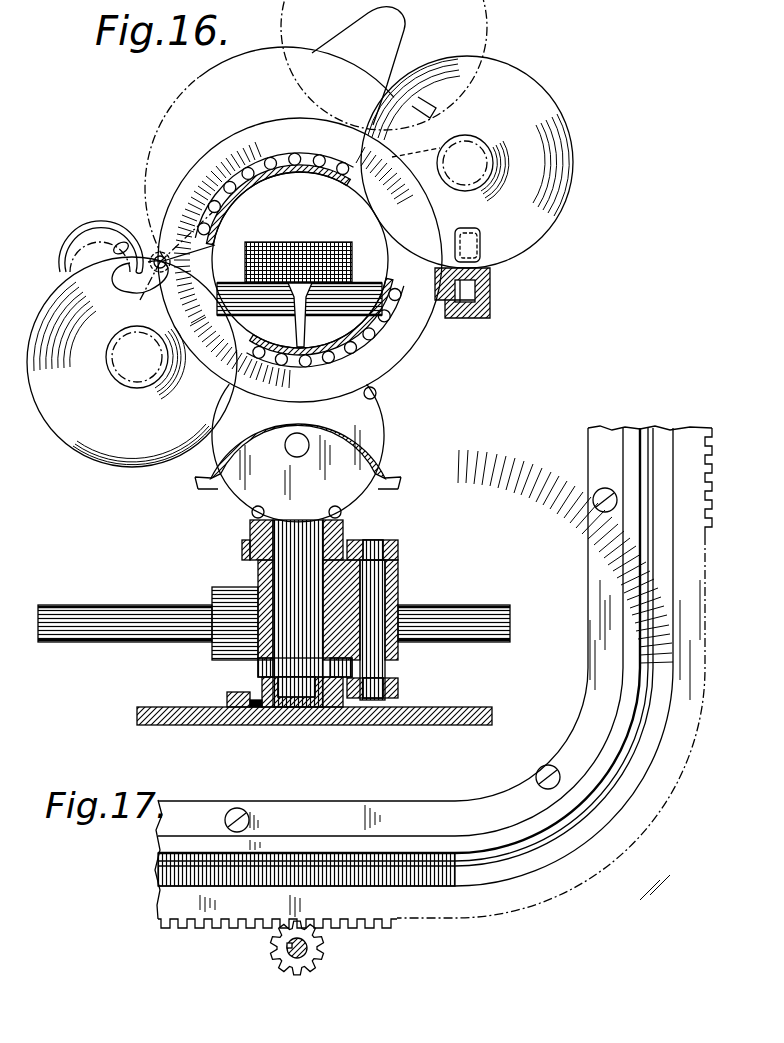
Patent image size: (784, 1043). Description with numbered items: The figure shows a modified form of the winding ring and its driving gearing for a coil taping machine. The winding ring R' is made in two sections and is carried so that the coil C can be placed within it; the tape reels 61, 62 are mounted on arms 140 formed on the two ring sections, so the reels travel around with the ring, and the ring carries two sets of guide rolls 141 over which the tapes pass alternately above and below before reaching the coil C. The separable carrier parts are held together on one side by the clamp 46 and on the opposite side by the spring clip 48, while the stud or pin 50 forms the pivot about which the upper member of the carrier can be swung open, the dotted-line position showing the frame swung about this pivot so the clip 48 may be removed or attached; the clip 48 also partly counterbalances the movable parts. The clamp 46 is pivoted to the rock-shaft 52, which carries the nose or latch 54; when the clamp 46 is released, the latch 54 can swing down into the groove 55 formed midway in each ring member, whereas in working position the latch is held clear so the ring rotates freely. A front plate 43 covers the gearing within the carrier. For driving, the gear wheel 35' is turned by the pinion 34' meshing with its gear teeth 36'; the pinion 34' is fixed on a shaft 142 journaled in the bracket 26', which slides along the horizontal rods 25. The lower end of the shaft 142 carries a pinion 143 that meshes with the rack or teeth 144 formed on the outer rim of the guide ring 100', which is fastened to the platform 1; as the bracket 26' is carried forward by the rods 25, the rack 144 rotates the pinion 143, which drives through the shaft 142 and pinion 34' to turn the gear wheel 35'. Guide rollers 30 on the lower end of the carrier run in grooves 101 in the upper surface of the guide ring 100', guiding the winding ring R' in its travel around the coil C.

In FIG. 16, the platform 1 is at (450, 722).
In FIG. 16, the horizontal rods 25 is at (453, 606).
In FIG. 16, the bracket 26' is at (230, 610).
In FIG. 16, the guide rollers 30 is at (318, 708).
In FIG. 16, the pinion 34' is at (400, 546).
In FIG. 16, the gear wheel 35' is at (280, 476).
In FIG. 16, the gear teeth 36' is at (224, 550).
In FIG. 16, the front plate 43 is at (298, 453).
In FIG. 16, the clamp 46 is at (480, 262).
In FIG. 16, the clamping ring or clip 48 is at (84, 240).
In FIG. 16, the stud or pin 50 is at (166, 268).
In FIG. 16, the rock-shaft 52 is at (452, 318).
In FIG. 16, the nose or latch 54 is at (290, 322).
In FIG. 16, the groove 55 is at (298, 173).
In FIG. 16, the tape reel 61 is at (467, 162).
In FIG. 16, the tape reel 62 is at (132, 362).
In FIG. 16, the guide ring 100' is at (216, 694).
In FIG. 17, the guide ring 100' is at (433, 672).
In FIG. 16, the grooves 101 is at (282, 712).
In FIG. 16, the arms 140 is at (168, 362).
In FIG. 16, the guide rolls 141 is at (318, 157).
In FIG. 16, the shaft 142 is at (372, 592).
In FIG. 17, the shaft 142 is at (292, 952).
In FIG. 16, the pinion 143 is at (398, 690).
In FIG. 17, the pinion 143 is at (310, 962).
In FIG. 17, the rack or teeth 144 is at (373, 928).
In FIG. 16, the coil C is at (320, 245).
In FIG. 16, the winding ring R' is at (315, 260).